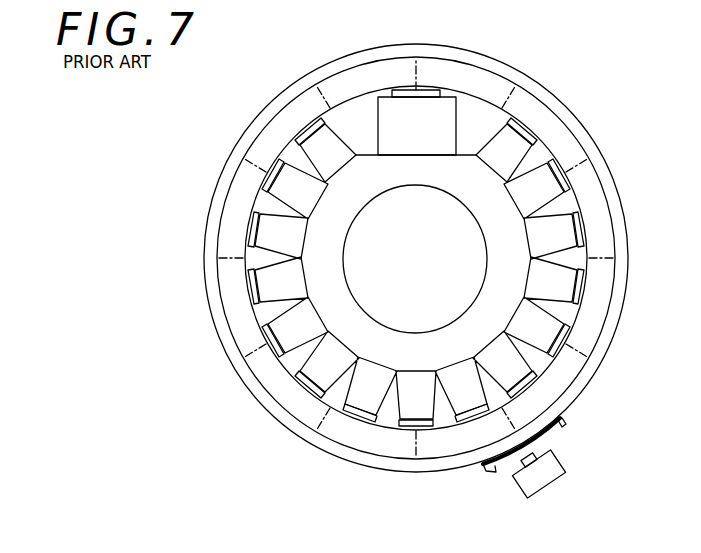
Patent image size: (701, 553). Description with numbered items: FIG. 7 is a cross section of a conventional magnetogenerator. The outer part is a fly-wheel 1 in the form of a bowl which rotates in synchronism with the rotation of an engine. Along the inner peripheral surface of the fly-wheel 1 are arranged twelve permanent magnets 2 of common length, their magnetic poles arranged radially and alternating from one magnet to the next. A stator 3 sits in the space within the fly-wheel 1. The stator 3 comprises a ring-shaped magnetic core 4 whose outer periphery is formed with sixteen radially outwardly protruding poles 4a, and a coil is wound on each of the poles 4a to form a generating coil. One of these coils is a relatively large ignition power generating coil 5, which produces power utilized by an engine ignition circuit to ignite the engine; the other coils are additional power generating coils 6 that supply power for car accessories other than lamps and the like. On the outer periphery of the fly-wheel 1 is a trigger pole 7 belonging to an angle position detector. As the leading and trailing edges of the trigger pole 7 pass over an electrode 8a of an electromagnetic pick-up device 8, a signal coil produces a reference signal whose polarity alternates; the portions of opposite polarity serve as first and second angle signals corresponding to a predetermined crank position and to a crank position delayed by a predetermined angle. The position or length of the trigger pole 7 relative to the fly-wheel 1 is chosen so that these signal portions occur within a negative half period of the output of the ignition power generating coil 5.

The fly-wheel 1 is at (581, 128).
The permanent magnets 2 is at (520, 98).
The stator 3 is at (478, 123).
The magnetic core 4 is at (356, 337).
The poles 4a is at (425, 89).
The ignition power generating coil 5 is at (387, 123).
The additional power generating coils 6 is at (323, 130).
The trigger pole 7 is at (498, 464).
The electromagnetic pick-up device 8 is at (542, 478).
The electrode 8a is at (548, 444).